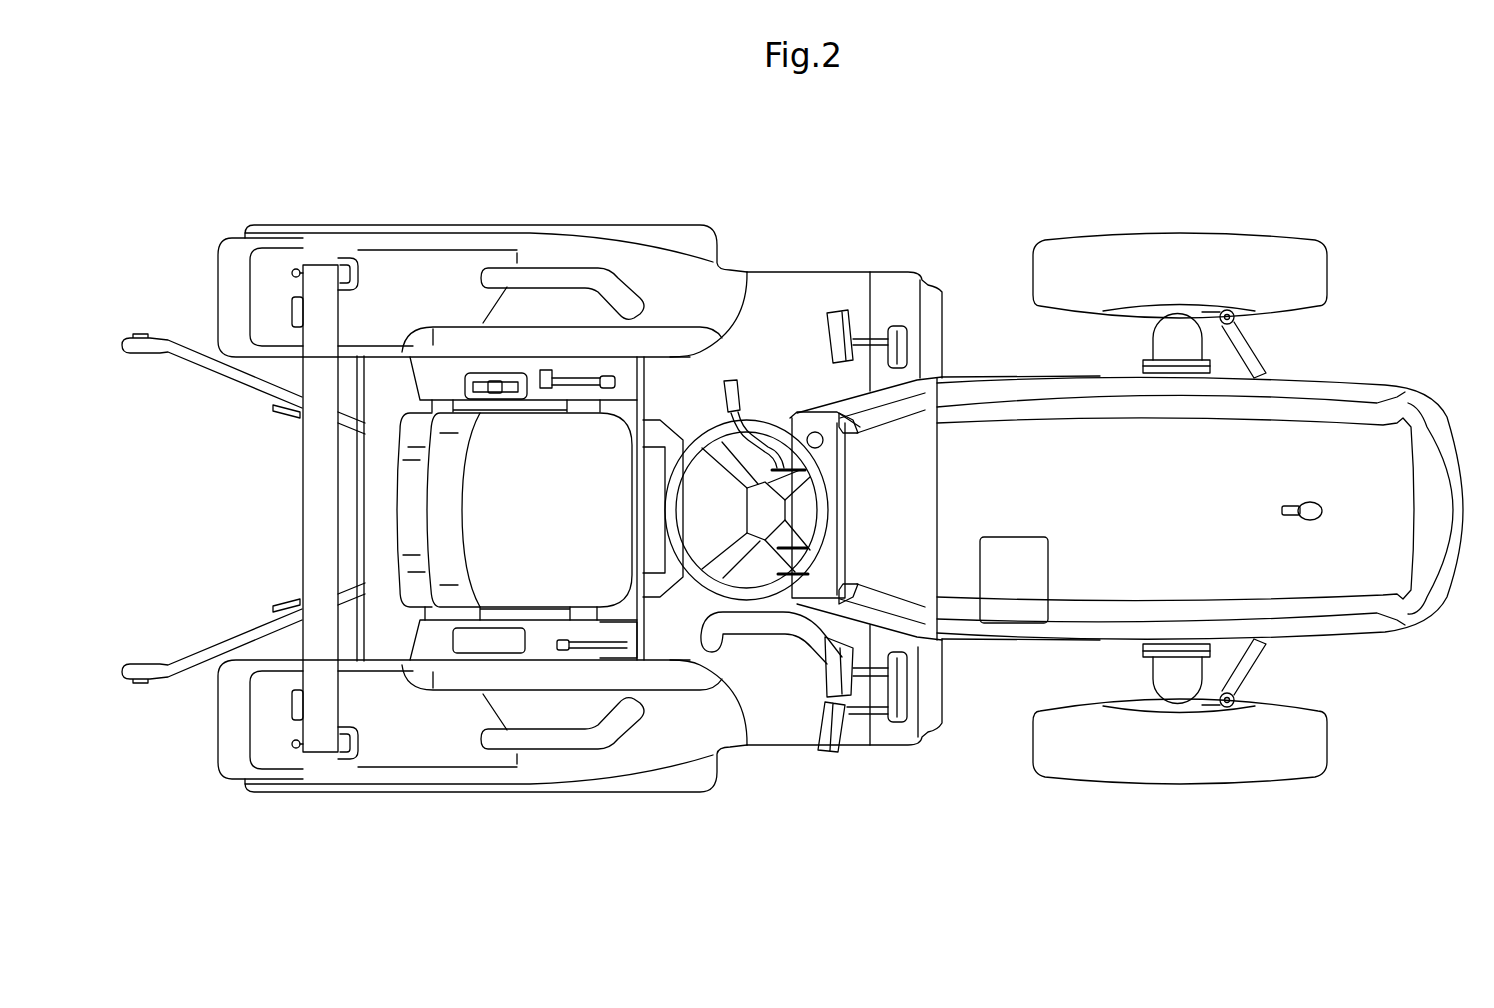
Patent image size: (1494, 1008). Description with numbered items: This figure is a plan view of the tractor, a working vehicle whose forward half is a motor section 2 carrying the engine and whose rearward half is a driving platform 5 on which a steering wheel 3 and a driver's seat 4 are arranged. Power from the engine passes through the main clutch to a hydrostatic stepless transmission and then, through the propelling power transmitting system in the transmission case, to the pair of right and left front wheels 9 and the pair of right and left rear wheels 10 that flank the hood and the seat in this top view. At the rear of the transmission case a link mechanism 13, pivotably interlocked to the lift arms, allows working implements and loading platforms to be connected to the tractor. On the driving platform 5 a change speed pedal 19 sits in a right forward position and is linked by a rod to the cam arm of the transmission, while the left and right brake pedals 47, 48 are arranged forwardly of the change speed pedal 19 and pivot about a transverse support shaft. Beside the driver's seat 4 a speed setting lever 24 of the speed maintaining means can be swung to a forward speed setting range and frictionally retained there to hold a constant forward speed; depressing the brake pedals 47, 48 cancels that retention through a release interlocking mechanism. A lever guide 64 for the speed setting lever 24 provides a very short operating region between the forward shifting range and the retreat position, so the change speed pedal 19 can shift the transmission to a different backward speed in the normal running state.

The motor section 2 is at (1325, 375).
The steering wheel 3 is at (772, 423).
The driver's seat 4 is at (602, 433).
The driving platform 5 is at (785, 326).
The front wheels 9 is at (1173, 234).
The rear wheels 10 is at (660, 226).
The link mechanism 13 is at (173, 339).
The change speed pedal 19 is at (763, 625).
The speed setting lever 24 is at (567, 652).
The left brake pedal 47 is at (822, 680).
The right brake pedal 48 is at (820, 735).
The lever guide 64 is at (636, 653).